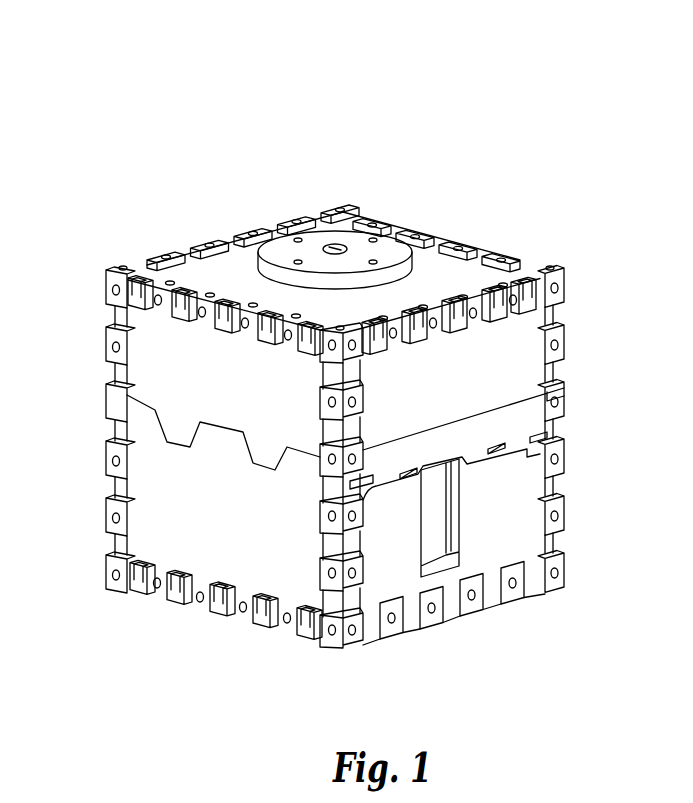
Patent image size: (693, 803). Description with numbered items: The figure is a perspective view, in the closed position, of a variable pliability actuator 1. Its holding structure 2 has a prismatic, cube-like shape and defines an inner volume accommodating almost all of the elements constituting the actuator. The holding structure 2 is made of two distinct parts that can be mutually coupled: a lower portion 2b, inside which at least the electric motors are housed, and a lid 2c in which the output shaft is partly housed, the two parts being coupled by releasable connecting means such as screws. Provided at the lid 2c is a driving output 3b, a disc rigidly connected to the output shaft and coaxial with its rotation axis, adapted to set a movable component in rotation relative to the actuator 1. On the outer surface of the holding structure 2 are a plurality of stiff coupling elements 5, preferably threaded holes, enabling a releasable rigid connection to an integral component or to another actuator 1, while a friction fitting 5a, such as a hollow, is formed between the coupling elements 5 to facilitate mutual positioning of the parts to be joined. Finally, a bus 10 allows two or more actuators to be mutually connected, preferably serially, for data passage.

The variable pliability actuator 1 is at (536, 200).
The holding structure 2 is at (150, 626).
The lower portion 2b is at (226, 535).
The lid 2c is at (226, 392).
The driving output 3b is at (340, 248).
The stiff coupling element 5 is at (247, 233).
The friction fitting 5a is at (553, 483).
The bus 10 is at (436, 561).